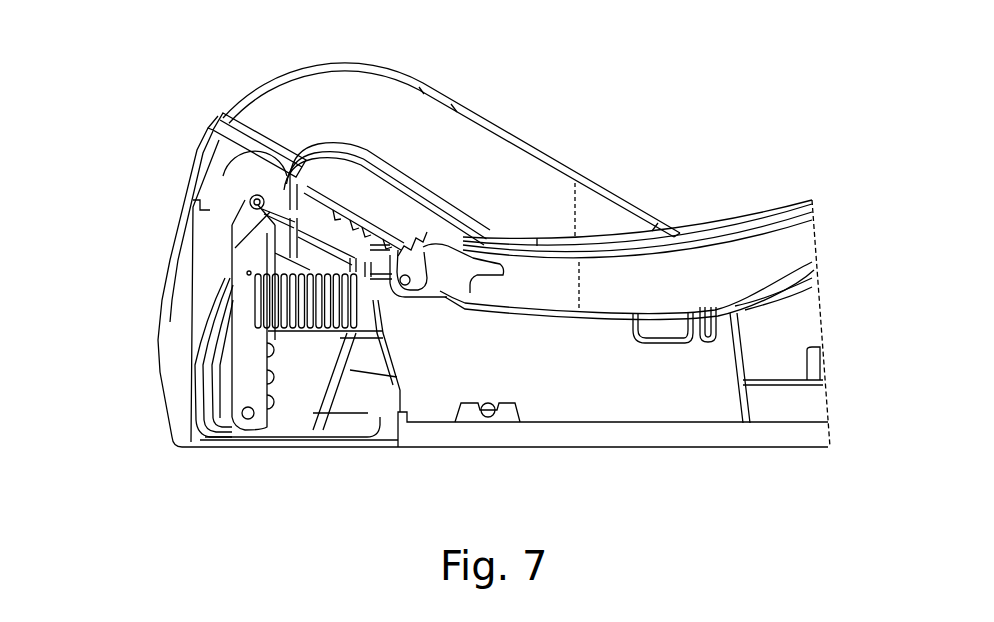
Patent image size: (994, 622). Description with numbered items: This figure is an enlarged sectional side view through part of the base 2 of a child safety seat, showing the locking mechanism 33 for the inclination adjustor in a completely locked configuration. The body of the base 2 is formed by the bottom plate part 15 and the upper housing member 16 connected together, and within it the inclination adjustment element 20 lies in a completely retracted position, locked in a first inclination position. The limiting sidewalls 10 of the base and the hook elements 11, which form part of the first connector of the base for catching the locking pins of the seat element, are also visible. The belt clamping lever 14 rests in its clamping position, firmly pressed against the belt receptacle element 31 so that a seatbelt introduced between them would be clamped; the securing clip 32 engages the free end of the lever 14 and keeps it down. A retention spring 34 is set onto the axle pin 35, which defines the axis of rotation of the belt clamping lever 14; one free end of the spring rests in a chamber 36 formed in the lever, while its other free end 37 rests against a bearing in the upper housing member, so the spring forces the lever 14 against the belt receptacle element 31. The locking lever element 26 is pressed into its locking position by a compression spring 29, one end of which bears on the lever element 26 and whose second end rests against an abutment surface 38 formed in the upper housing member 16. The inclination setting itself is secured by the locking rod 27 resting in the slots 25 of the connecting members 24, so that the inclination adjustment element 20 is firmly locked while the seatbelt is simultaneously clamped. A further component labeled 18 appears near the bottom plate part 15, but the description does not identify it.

The base 2 is at (630, 108).
The limiting sidewalls 10 is at (730, 225).
The hook elements 11 is at (487, 267).
The belt clamping lever 14 is at (353, 195).
The bottom plate part 15 is at (632, 454).
The upper housing member 16 is at (627, 240).
The fastening boss 18 is at (489, 418).
The inclination adjustment element 20 is at (345, 448).
The connecting members 24 is at (225, 397).
The slots 25 is at (268, 360).
The locking lever element 26 is at (243, 338).
The locking rod 27 is at (248, 419).
The compression spring 29 is at (322, 322).
The belt receptacle element 31 is at (377, 265).
The securing clip 32 is at (430, 250).
The locking mechanism 33 is at (135, 128).
The retention spring 34 is at (288, 192).
The axle pin 35 is at (250, 200).
The chamber 36 is at (298, 160).
The free end 37 is at (210, 140).
The abutment surface 38 is at (353, 325).